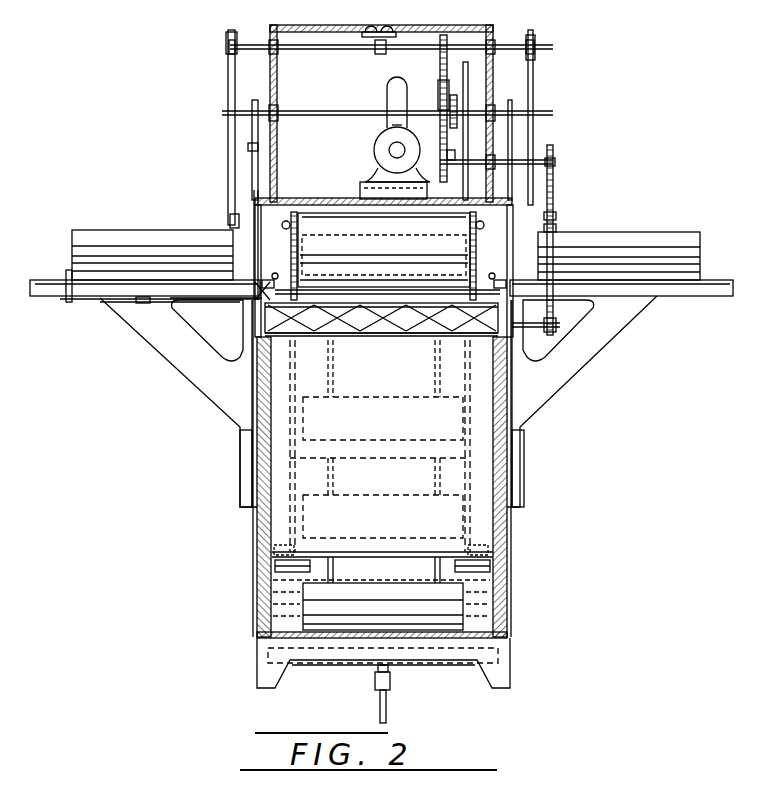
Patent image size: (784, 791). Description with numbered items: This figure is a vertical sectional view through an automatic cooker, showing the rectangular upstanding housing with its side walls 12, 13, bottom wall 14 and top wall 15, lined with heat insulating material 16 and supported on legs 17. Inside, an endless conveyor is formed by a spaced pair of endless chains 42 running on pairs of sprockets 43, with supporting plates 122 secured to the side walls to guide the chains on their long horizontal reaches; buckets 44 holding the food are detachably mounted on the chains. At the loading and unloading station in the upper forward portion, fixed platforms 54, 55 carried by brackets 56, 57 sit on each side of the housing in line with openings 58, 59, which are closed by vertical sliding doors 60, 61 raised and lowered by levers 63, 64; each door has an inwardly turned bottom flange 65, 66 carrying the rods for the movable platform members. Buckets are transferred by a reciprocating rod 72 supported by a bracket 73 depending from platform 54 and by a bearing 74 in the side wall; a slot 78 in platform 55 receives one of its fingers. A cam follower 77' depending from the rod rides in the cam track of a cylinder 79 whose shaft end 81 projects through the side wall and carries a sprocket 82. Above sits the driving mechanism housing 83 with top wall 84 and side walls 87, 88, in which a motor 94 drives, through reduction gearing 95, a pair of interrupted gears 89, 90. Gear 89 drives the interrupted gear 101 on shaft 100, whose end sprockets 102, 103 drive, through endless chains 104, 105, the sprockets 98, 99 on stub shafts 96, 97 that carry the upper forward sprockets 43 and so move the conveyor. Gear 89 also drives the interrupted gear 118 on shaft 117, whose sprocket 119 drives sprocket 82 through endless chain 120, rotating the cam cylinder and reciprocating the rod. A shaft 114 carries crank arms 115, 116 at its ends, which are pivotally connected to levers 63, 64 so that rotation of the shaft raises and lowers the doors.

The side wall 12 is at (262, 548).
The side wall 13 is at (505, 546).
The bottom wall 14 is at (505, 645).
The top wall 15 is at (300, 198).
The heat insulating material 16 is at (250, 455).
The legs 17 is at (257, 683).
The endless chains 42 is at (399, 266).
The sprockets 43 is at (468, 548).
The buckets 44 is at (385, 248).
The fixed platform 54 is at (45, 280).
The fixed platform 55 is at (712, 280).
The bracket 56 is at (172, 366).
The bracket 57 is at (592, 345).
The opening 58 is at (272, 271).
The opening 59 is at (508, 270).
The vertical sliding door 60 is at (256, 252).
The vertical sliding door 61 is at (513, 248).
The lever 63 is at (253, 190).
The lever 64 is at (512, 190).
The flange 65 is at (258, 300).
The flange 66 is at (450, 290).
The rod 72 is at (90, 302).
The bracket 73 is at (142, 304).
The bearing 74 is at (220, 302).
The cam follower 77' is at (215, 330).
The slot 78 is at (348, 328).
The cylinder 79 is at (416, 330).
The right hand end of shaft 81 is at (545, 325).
The sprocket 82 is at (556, 325).
The housing 83 is at (372, 40).
The top wall 84 is at (332, 43).
The side wall 87 is at (270, 73).
The side wall 88 is at (493, 72).
The interrupted gear 89 is at (438, 86).
The interrupted gear 90 is at (468, 96).
The motor 94 is at (385, 146).
The reduction gearing 95 is at (388, 102).
The stub shaft 96 is at (306, 256).
The stub shaft 97 is at (484, 256).
The sprocket 98 is at (230, 222).
The sprocket 99 is at (556, 226).
The shaft 100 is at (490, 45).
The interrupted gear 101 is at (440, 62).
The sprocket 102 is at (226, 48).
The sprocket 103 is at (535, 47).
The endless chain 104 is at (228, 120).
The endless chain 105 is at (533, 92).
The shaft 114 is at (304, 113).
The crank arm 115 is at (252, 142).
The crank arm 116 is at (512, 137).
The shaft 117 is at (553, 158).
The interrupted gear 118 is at (452, 160).
The sprocket 119 is at (555, 162).
The endless chain 120 is at (556, 215).
The supporting plates 122 is at (275, 568).